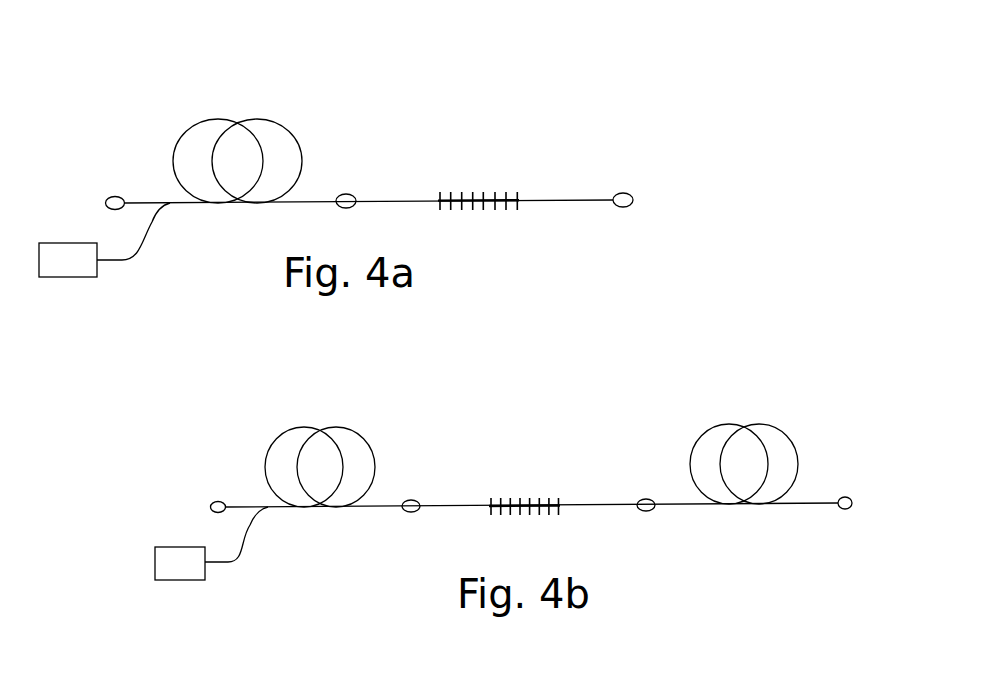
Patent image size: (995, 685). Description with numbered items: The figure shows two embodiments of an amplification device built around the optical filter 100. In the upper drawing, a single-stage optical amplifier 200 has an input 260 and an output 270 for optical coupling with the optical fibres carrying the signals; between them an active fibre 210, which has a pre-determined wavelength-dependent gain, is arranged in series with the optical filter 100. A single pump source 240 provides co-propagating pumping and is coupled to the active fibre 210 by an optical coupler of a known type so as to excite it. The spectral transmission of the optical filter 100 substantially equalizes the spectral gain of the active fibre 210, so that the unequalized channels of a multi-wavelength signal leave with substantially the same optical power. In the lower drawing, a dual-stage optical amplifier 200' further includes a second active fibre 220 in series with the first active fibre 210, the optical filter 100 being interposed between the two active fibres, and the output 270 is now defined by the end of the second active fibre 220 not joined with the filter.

In FIG. 4A, the optical filter 100 is at (455, 165).
In FIG. 4B, the optical filter 100 is at (515, 475).
In FIG. 4A, the single-stage optical amplifier 200 is at (348, 196).
In FIG. 4B, the dual-stage optical amplifier 200' is at (504, 468).
In FIG. 4A, the active fibre 210 is at (180, 140).
In FIG. 4B, the active fibre 210 is at (293, 430).
In FIG. 4B, the second active fibre 220 is at (760, 425).
In FIG. 4A, the pump source 240 is at (67, 272).
In FIG. 4B, the pump source 240 is at (183, 573).
In FIG. 4A, the input 260 is at (111, 197).
In FIG. 4B, the input 260 is at (213, 502).
In FIG. 4A, the output 270 is at (616, 196).
In FIG. 4B, the output 270 is at (840, 498).